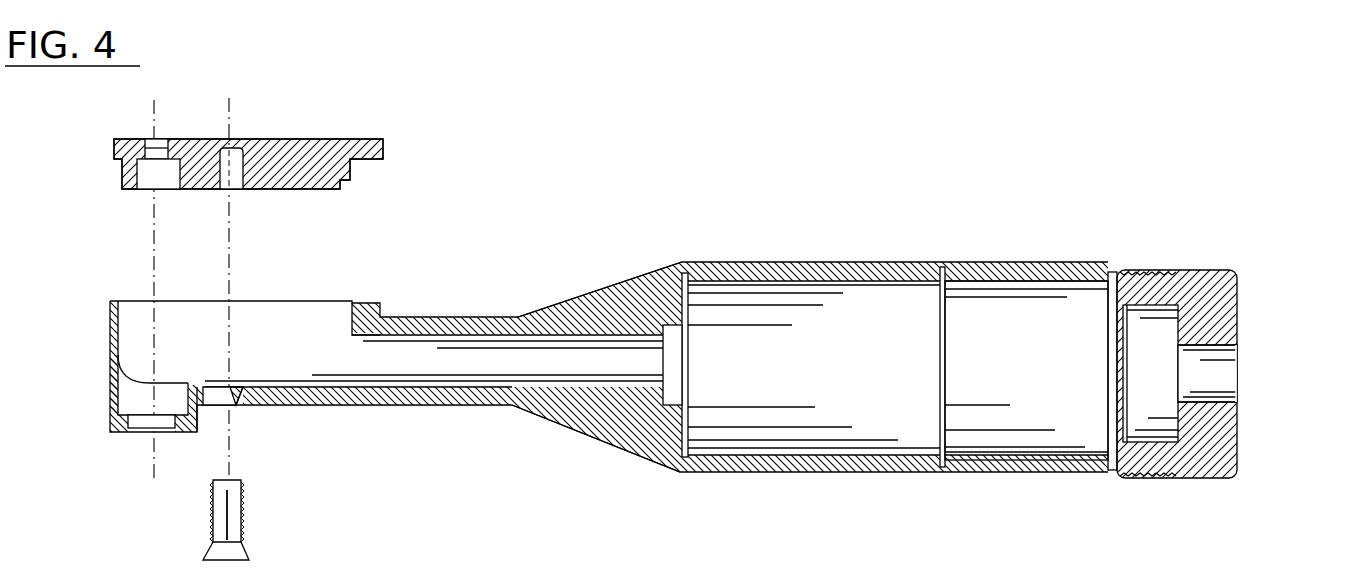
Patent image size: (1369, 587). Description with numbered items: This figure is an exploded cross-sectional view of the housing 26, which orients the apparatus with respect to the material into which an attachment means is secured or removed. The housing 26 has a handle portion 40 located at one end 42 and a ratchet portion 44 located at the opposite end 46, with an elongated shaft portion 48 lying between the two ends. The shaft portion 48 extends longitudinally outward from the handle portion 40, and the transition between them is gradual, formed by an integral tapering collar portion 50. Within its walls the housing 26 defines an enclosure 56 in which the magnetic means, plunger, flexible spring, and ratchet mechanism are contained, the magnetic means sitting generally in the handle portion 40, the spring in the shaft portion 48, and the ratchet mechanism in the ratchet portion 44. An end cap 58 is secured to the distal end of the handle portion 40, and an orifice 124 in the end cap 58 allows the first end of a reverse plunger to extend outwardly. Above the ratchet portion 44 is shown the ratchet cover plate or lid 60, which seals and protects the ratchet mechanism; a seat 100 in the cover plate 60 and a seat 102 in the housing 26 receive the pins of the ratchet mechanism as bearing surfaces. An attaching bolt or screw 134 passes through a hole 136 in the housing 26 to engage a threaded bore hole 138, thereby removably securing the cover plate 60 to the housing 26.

The housing 26 is at (789, 261).
The handle portion 40 is at (920, 263).
The end 42 is at (1145, 270).
The ratchet portion 44 is at (116, 383).
The opposite end 46 is at (112, 372).
The elongated shaft portion 48 is at (354, 427).
The integral tapering collar portion 50 is at (617, 285).
The enclosure 56 is at (853, 309).
The end cap 58 is at (1229, 347).
The ratchet cover plate or lid 60 is at (212, 163).
The seat 100 is at (147, 181).
The seat 102 is at (130, 432).
The orifice 124 is at (1223, 357).
The attaching bolt or screw 134 is at (236, 552).
The hole 136 is at (233, 405).
The threaded bore hole 138 is at (233, 189).